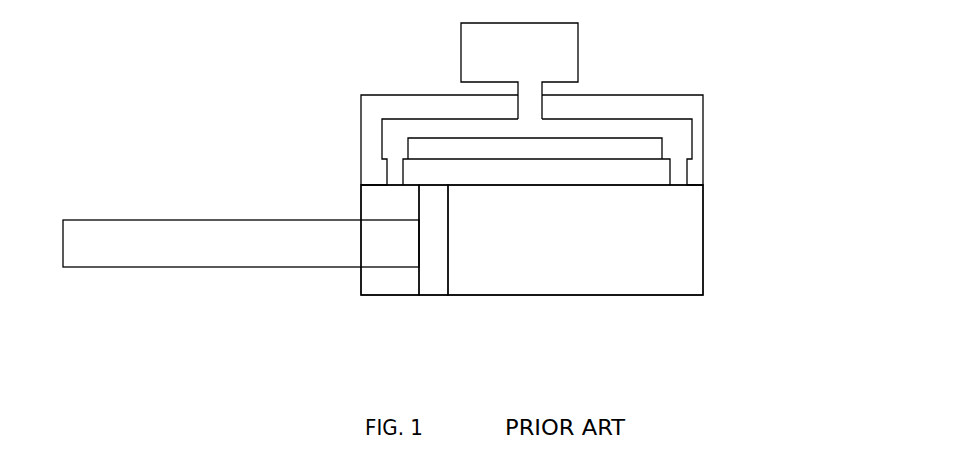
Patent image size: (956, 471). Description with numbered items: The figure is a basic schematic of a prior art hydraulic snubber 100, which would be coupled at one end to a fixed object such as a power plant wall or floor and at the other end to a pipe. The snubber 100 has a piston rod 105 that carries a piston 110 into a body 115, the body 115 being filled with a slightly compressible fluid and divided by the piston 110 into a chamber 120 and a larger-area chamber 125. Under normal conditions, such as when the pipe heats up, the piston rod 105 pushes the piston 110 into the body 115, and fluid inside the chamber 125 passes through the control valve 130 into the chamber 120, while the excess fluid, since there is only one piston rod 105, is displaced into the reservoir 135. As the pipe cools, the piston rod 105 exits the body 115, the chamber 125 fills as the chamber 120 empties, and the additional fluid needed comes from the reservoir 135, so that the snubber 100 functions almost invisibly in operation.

The snubber 100 is at (190, 152).
The piston rod 105 is at (173, 268).
The piston 110 is at (435, 284).
The body 115 is at (680, 297).
The chamber 120 is at (388, 284).
The chamber 125 is at (610, 277).
The control valve 130 is at (704, 103).
The reservoir 135 is at (579, 57).